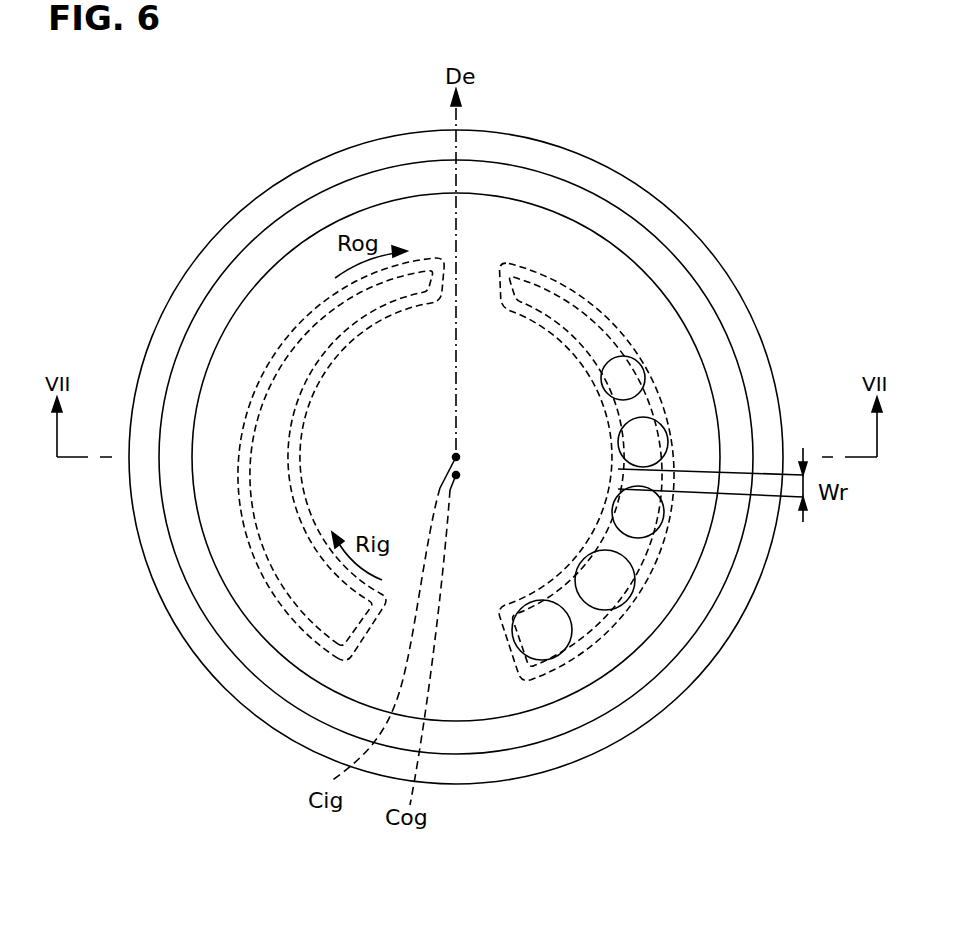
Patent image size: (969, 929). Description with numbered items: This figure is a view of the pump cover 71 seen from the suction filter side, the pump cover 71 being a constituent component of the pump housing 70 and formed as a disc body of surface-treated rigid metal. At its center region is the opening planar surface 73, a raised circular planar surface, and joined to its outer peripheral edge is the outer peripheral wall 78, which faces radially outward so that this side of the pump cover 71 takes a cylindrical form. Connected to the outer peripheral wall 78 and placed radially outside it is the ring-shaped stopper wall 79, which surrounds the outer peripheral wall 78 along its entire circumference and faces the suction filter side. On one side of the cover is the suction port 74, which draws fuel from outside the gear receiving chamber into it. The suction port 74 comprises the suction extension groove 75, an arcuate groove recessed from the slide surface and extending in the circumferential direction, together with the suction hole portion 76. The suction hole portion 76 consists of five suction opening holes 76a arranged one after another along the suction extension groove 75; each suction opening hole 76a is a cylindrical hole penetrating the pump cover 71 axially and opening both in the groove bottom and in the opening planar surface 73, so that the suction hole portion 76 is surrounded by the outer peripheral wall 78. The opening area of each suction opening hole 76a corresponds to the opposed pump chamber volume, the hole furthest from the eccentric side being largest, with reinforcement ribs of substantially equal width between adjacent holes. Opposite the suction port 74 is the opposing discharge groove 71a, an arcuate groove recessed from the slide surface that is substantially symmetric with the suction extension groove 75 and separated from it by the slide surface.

The pump housing 70 is at (280, 183).
The pump cover 71 is at (456, 457).
The opposing discharge groove 71a is at (240, 505).
The opening planar surface 73 is at (555, 373).
The suction port 74 is at (504, 642).
The suction extension groove 75 is at (567, 283).
The suction hole portion 76 is at (676, 557).
The suction opening hole 76a is at (662, 526).
The outer peripheral wall 78 is at (233, 313).
The stopper wall 79 is at (255, 262).